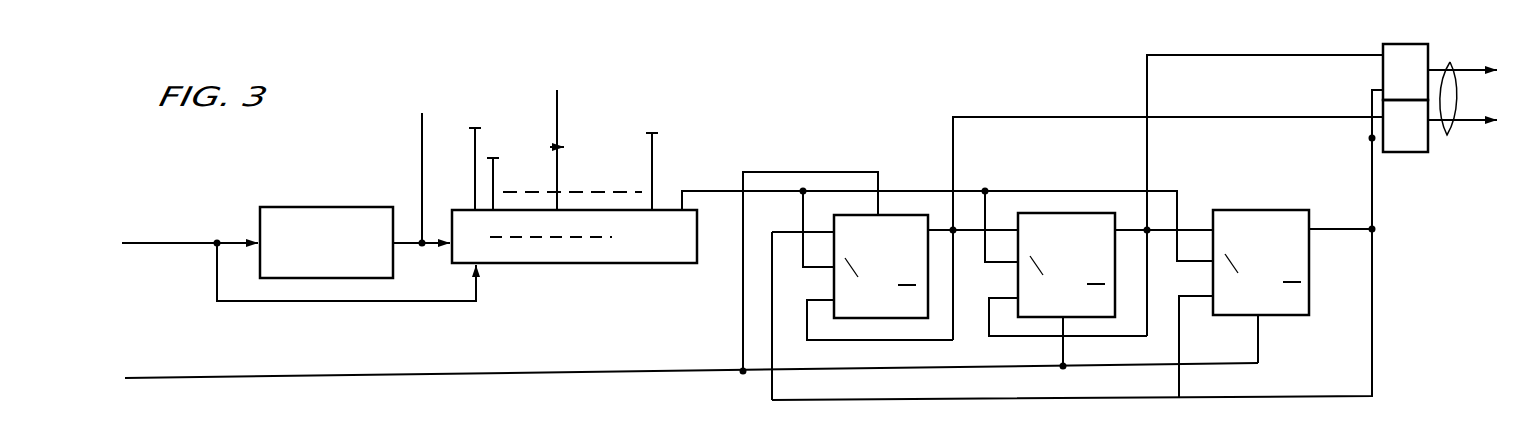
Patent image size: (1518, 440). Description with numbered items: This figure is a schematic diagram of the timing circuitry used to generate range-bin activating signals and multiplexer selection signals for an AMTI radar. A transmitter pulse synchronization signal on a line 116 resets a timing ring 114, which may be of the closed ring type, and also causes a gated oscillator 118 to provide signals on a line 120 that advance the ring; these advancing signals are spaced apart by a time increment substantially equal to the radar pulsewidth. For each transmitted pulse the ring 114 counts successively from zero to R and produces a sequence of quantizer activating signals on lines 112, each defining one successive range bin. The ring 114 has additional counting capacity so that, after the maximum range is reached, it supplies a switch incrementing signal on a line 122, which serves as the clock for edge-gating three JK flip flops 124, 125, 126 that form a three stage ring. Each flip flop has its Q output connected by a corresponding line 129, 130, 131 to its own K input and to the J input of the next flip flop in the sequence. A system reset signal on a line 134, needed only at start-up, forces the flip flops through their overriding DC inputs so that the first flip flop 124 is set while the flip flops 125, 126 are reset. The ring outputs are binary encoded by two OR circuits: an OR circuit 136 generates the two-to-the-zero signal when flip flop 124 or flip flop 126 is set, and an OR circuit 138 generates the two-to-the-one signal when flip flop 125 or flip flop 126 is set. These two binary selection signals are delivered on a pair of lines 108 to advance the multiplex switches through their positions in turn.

The pair of lines 108 is at (1447, 135).
The lines 112 is at (476, 128).
The timing ring 114 is at (612, 255).
The line 116 is at (192, 243).
The gated oscillator 118 is at (348, 207).
The line 120 is at (424, 118).
The line 122 is at (708, 191).
The JK flip flop 124 is at (893, 318).
The JK flip flop 125 is at (1088, 318).
The JK flip flop 126 is at (1296, 316).
The line 129 is at (953, 168).
The line 130 is at (1147, 168).
The line 131 is at (1372, 192).
The line 134 is at (452, 372).
The OR circuit 136 is at (1410, 152).
The OR circuit 138 is at (1392, 45).